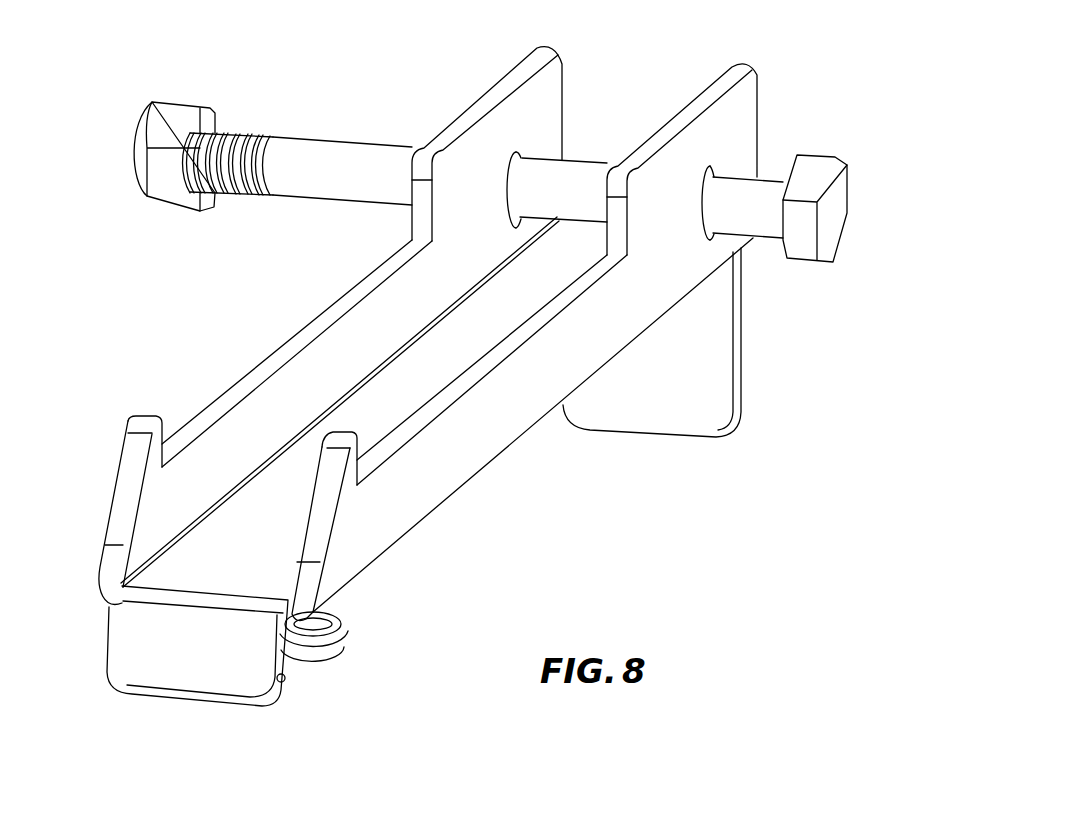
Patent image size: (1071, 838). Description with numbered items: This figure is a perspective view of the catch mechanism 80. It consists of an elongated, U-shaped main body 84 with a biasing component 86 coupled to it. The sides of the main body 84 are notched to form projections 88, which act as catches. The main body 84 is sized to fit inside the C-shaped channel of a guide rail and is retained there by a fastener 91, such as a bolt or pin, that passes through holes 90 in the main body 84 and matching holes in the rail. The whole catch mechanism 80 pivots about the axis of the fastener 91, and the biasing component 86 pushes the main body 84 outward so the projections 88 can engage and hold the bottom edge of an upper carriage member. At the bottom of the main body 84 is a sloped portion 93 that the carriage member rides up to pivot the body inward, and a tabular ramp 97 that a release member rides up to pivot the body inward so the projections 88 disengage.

The catch mechanism 80 is at (639, 74).
The main body 84 is at (460, 163).
The biasing component 86 is at (335, 650).
The projections 88 is at (142, 426).
The holes 90 is at (520, 157).
The fastener 91 is at (303, 178).
The sloped portion 93 is at (120, 497).
The tabular ramp 97 is at (172, 673).